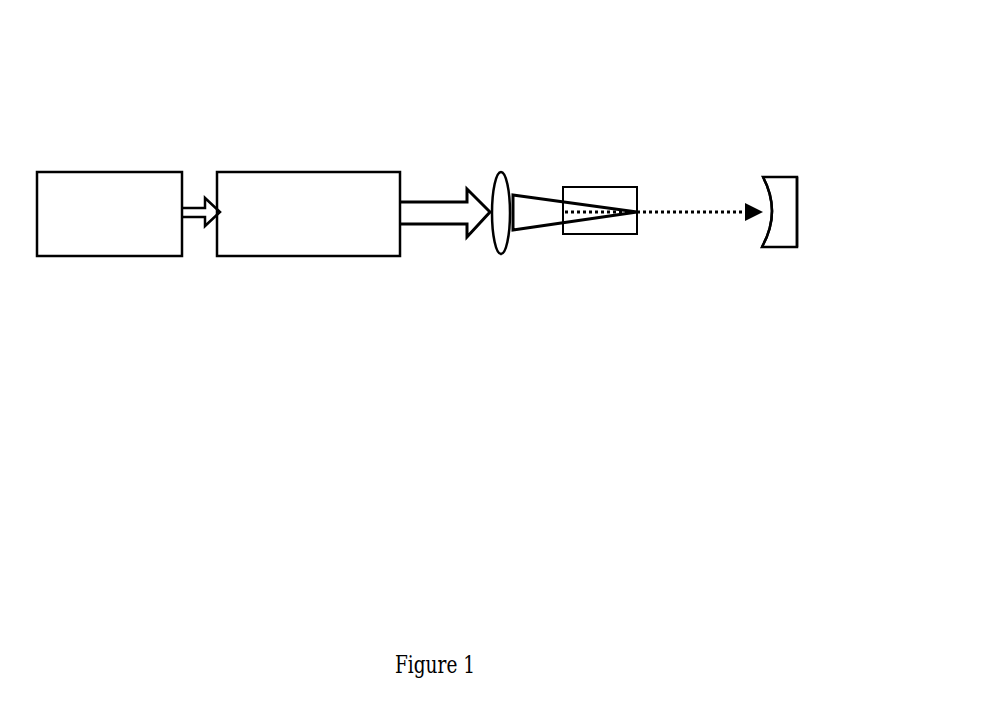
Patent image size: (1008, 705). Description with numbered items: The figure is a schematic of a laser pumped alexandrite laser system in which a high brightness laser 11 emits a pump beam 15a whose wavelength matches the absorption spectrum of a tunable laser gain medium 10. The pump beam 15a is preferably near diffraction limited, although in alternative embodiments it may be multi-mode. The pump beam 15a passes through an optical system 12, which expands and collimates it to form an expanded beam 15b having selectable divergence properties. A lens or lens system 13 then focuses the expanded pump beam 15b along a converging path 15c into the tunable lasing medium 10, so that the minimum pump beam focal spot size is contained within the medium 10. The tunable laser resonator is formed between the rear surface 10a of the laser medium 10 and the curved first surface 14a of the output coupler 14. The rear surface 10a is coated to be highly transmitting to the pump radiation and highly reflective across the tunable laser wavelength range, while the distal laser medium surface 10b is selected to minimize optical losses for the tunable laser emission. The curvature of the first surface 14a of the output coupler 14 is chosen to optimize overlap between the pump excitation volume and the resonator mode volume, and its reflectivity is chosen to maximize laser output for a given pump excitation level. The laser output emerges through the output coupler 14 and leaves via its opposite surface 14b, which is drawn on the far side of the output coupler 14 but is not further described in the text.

The tunable laser gain medium 10 is at (603, 250).
The rear surface of the laser medium 10a is at (551, 186).
The distal laser medium surface 10b is at (646, 181).
The high brightness laser 11 is at (112, 150).
The optical system 12 is at (317, 272).
The lens or lens system 13 is at (500, 272).
The output coupler 14 is at (786, 150).
The curved first surface of the output coupler 14a is at (760, 228).
The rear surface of mirror 14b is at (802, 228).
The pump beam 15a is at (200, 245).
The expanded beam 15b is at (448, 258).
The focused pump beam path 15c is at (546, 246).